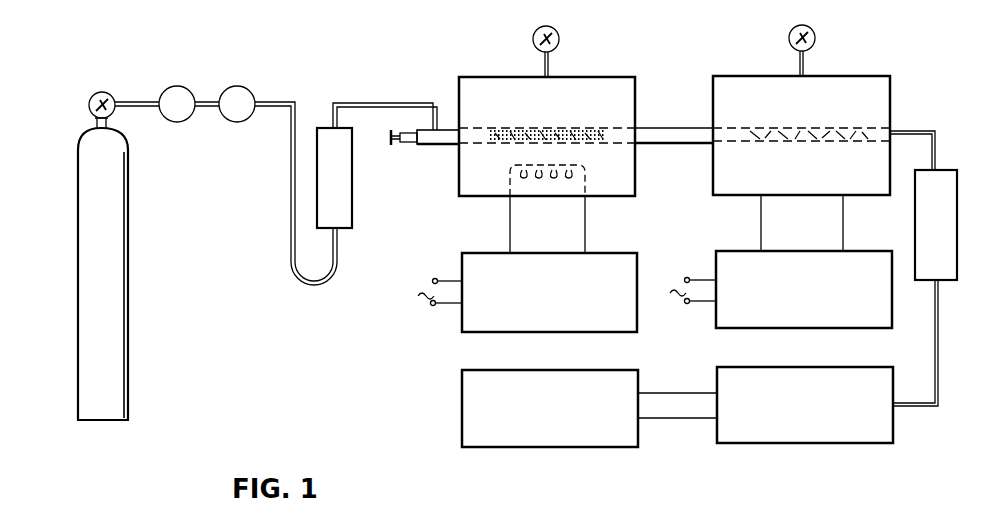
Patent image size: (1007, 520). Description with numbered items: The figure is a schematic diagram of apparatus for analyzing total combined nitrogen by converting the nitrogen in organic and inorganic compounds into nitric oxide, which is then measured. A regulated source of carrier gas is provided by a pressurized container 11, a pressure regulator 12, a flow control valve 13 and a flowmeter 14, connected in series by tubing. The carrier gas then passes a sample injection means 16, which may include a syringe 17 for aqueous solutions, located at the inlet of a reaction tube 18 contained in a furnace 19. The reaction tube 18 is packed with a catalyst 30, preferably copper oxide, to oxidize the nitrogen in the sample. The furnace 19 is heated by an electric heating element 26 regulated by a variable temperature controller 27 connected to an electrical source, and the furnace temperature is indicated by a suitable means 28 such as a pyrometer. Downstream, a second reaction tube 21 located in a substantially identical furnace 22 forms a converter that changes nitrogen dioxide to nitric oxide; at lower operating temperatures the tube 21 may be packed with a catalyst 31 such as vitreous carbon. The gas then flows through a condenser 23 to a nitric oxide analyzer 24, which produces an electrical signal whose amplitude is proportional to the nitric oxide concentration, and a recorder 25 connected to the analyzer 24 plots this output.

The pressurized container 11 is at (130, 262).
The pressure regulator 12 is at (178, 86).
The flow control valve 13 is at (238, 86).
The flowmeter 14 is at (352, 224).
The sample injection means 16 is at (443, 146).
The syringe 17 is at (410, 143).
The reaction tube 18 is at (481, 128).
The furnace 19 is at (600, 77).
The second reaction tube 21 is at (723, 128).
The furnace 22 is at (848, 76).
The condenser 23 is at (946, 278).
The nitric oxide analyzer 24 is at (826, 367).
The recorder 25 is at (606, 370).
The electric heating element 26 is at (493, 178).
The variable temperature controller 27 is at (605, 253).
The temperature indicating means 28 is at (558, 29).
The catalyst 30 is at (605, 134).
The catalyst 31 is at (868, 130).